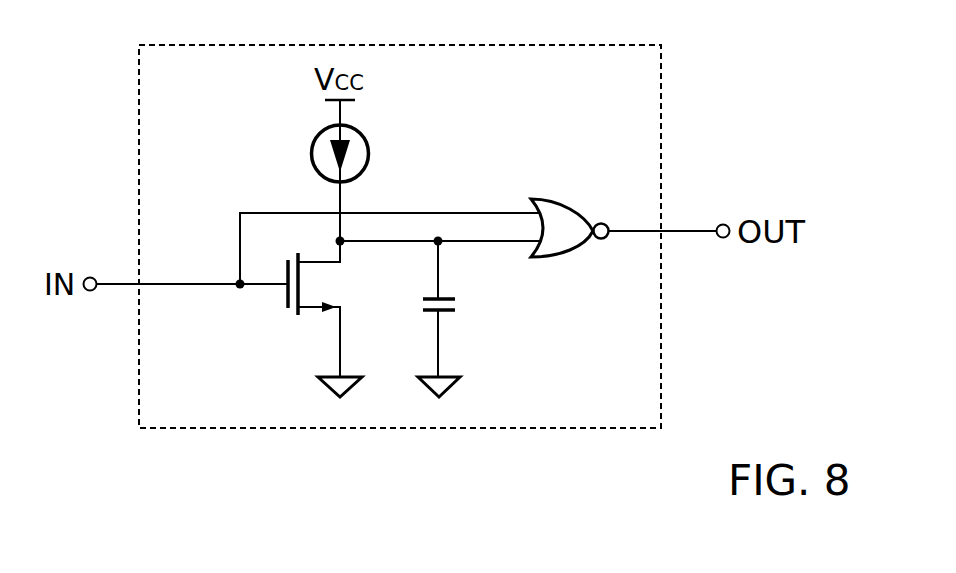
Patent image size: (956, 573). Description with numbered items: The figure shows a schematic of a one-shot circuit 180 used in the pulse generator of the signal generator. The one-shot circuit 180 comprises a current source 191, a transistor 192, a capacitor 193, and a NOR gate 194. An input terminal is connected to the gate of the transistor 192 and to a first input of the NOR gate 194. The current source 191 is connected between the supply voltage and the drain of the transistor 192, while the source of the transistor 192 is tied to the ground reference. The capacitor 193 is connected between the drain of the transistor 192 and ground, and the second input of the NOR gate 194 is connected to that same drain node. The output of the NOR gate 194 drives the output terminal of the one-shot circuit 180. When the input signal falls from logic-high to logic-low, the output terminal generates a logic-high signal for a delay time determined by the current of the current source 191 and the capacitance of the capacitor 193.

The one-shot circuit 180 is at (591, 44).
The current source 191 is at (310, 153).
The transistor 192 is at (343, 286).
The capacitor 193 is at (460, 303).
The NOR gate 194 is at (572, 202).